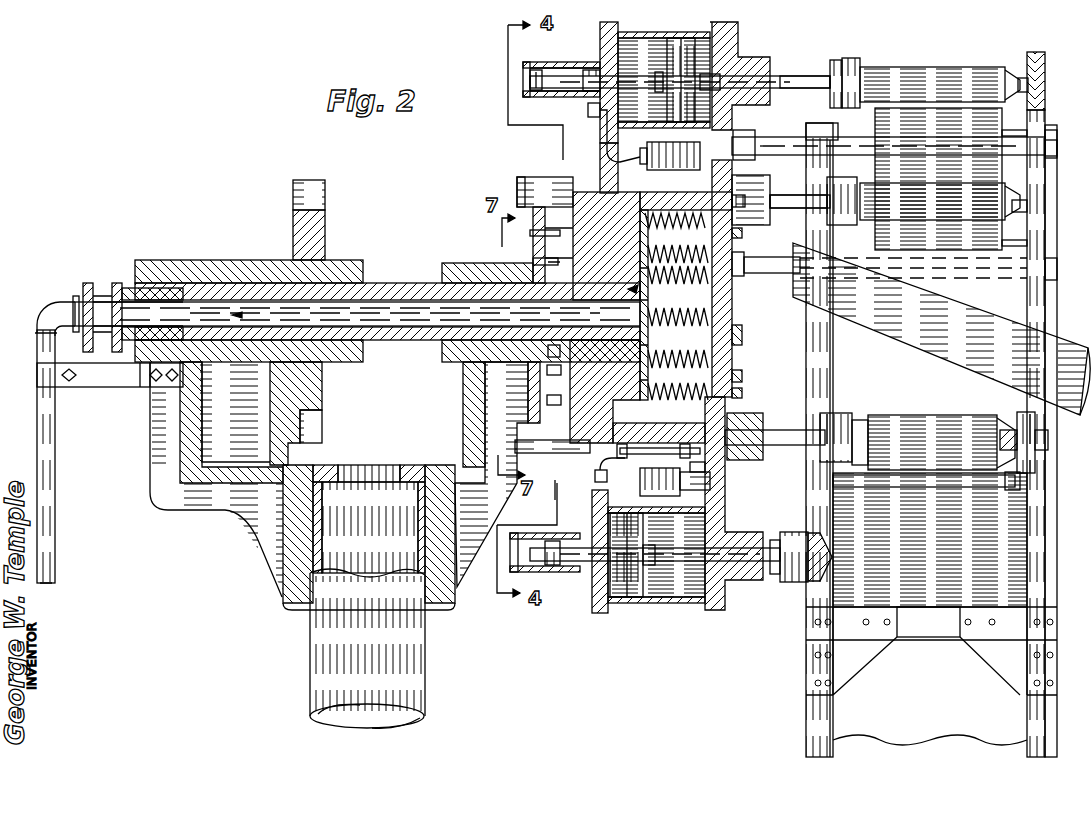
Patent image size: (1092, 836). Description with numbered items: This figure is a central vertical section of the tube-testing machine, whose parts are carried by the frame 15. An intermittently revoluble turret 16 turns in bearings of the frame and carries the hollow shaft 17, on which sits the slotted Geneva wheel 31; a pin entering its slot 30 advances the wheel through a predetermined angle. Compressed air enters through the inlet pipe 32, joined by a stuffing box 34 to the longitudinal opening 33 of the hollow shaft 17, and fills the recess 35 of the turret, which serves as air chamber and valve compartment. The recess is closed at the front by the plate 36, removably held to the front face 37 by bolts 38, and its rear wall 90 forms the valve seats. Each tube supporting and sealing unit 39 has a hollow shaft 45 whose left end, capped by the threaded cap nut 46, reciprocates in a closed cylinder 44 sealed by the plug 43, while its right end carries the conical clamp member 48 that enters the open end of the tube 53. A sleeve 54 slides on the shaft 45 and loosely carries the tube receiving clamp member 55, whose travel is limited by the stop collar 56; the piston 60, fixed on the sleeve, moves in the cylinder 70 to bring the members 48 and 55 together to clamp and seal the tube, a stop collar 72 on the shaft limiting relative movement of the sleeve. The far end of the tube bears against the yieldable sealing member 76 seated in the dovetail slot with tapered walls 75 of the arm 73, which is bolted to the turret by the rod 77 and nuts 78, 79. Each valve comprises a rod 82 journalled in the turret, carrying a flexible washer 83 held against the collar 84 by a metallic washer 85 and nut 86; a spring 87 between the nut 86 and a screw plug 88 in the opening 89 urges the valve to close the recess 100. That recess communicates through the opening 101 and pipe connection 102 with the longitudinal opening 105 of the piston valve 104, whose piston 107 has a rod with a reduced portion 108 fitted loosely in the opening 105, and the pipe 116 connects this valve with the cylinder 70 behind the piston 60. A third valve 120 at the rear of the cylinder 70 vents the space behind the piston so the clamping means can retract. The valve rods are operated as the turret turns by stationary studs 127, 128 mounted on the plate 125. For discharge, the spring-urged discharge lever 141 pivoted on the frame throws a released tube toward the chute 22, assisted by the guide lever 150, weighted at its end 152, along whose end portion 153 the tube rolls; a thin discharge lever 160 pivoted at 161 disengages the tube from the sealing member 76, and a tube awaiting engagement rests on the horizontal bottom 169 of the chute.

The frame 15 is at (190, 506).
The turret 16 is at (742, 28).
The hollow shaft 17 is at (420, 268).
The chute 22 is at (985, 300).
The slot 30 is at (325, 193).
The slotted Geneva wheel 31 is at (325, 238).
The compressed air inlet pipe 32 is at (50, 466).
The longitudinal opening 33 is at (404, 328).
The stuffing box 34 is at (104, 282).
The recess 35 is at (732, 302).
The plate 36 is at (742, 336).
The front face 37 is at (740, 172).
The bolts 38 is at (752, 200).
The tube supporting and sealing unit 39 is at (798, 410).
The plug 43 is at (538, 97).
The cylinder 44 is at (552, 66).
The shaft 45 is at (638, 88).
The threaded cap nut 46 is at (592, 70).
The conical clamp member 48 is at (826, 548).
The tube 53 is at (940, 66).
The sleeve 54 is at (778, 582).
The tube receiving clamp member 55 is at (852, 58).
The stop collar 56 is at (836, 60).
The piston 60 is at (690, 38).
The cylinder 70 is at (650, 32).
The stop collar 72 is at (660, 72).
The arm 73 is at (1058, 134).
The tapered walls 75 is at (1036, 52).
The sealing member 76 is at (1022, 78).
The rod 77 is at (882, 176).
The nut 78 is at (1057, 145).
The nut 79 is at (758, 133).
The rod 82 is at (564, 242).
The washer 83 is at (600, 445).
The collar 84 is at (555, 453).
The metallic washer 85 is at (575, 180).
The nut 86 is at (686, 240).
The spring 87 is at (690, 285).
The screw plug 88 is at (750, 393).
The opening 89 is at (750, 376).
The rear wall 90 is at (662, 330).
The recess 100 is at (558, 378).
The opening 101 is at (558, 406).
The pipe connection 102 is at (654, 442).
The piston valve 104 is at (676, 142).
The longitudinal opening 105 is at (712, 487).
The piston 107 is at (632, 498).
The reduced portion 108 is at (712, 475).
The pipe 116 is at (607, 464).
The third valve 120 is at (594, 117).
The plate 125 is at (531, 234).
The stud 127 is at (533, 260).
The stud 128 is at (556, 360).
The discharge lever 141 is at (1027, 206).
The guide lever 150 is at (980, 178).
The weighted end 152 is at (1015, 124).
The end portion 153 is at (1015, 251).
The discharge lever 160 is at (1005, 440).
The pivot 161 is at (1020, 485).
The horizontal bottom 169 is at (860, 603).